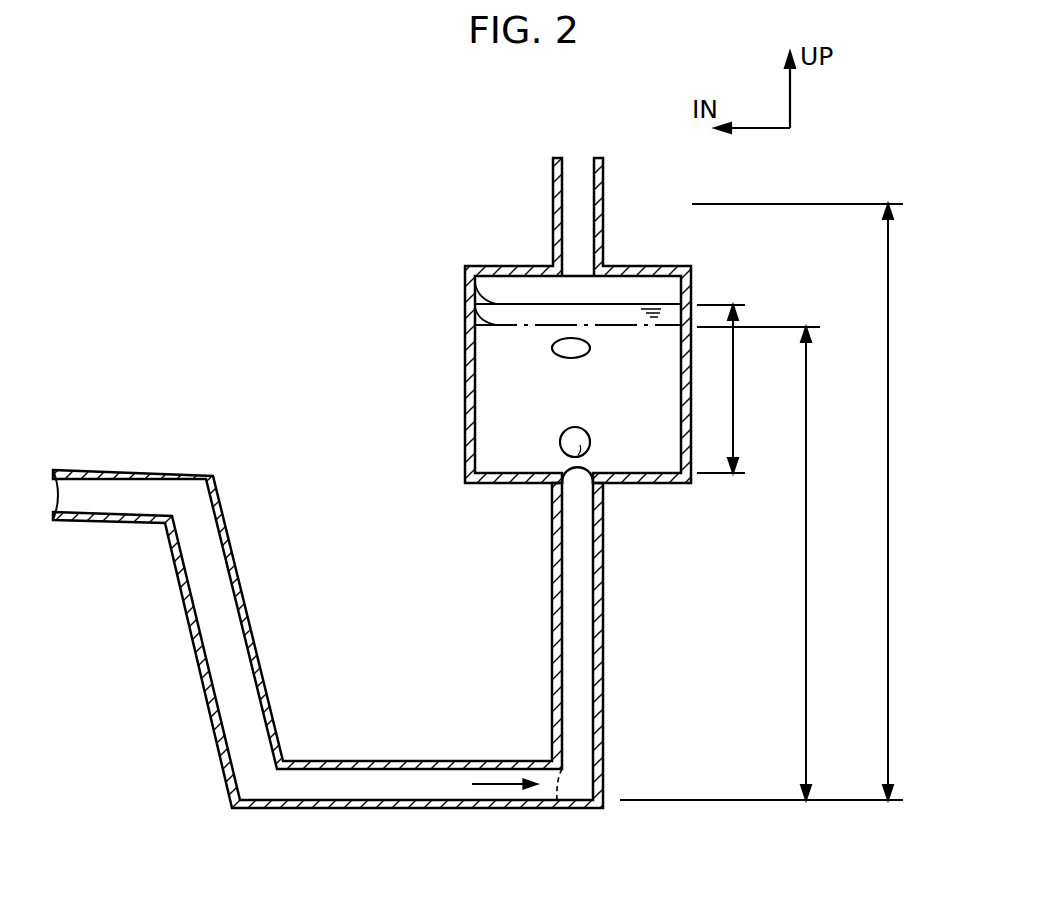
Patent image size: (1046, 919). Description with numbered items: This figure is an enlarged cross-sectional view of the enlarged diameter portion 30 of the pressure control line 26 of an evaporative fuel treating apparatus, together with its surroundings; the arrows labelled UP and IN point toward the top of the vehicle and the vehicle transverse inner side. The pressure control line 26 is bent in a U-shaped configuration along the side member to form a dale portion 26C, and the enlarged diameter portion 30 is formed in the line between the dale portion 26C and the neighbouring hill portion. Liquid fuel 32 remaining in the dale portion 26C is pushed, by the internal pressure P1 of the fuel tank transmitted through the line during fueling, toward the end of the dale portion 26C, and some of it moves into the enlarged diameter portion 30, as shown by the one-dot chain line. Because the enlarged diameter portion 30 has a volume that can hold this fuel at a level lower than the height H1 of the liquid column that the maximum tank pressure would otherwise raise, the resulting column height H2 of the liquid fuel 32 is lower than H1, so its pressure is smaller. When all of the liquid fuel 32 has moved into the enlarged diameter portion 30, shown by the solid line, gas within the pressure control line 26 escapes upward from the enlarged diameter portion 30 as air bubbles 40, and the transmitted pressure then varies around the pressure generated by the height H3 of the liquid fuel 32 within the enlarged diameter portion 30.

The pressure control line 26 is at (612, 615).
The dale portion 26C is at (413, 748).
The enlarged diameter portion 30 is at (456, 403).
The liquid fuel 32 is at (473, 308).
The air bubbles 40 is at (568, 428).
The internal pressure P1 is at (490, 783).
The height H1 is at (896, 522).
The height H2 is at (812, 521).
The height H3 is at (735, 406).